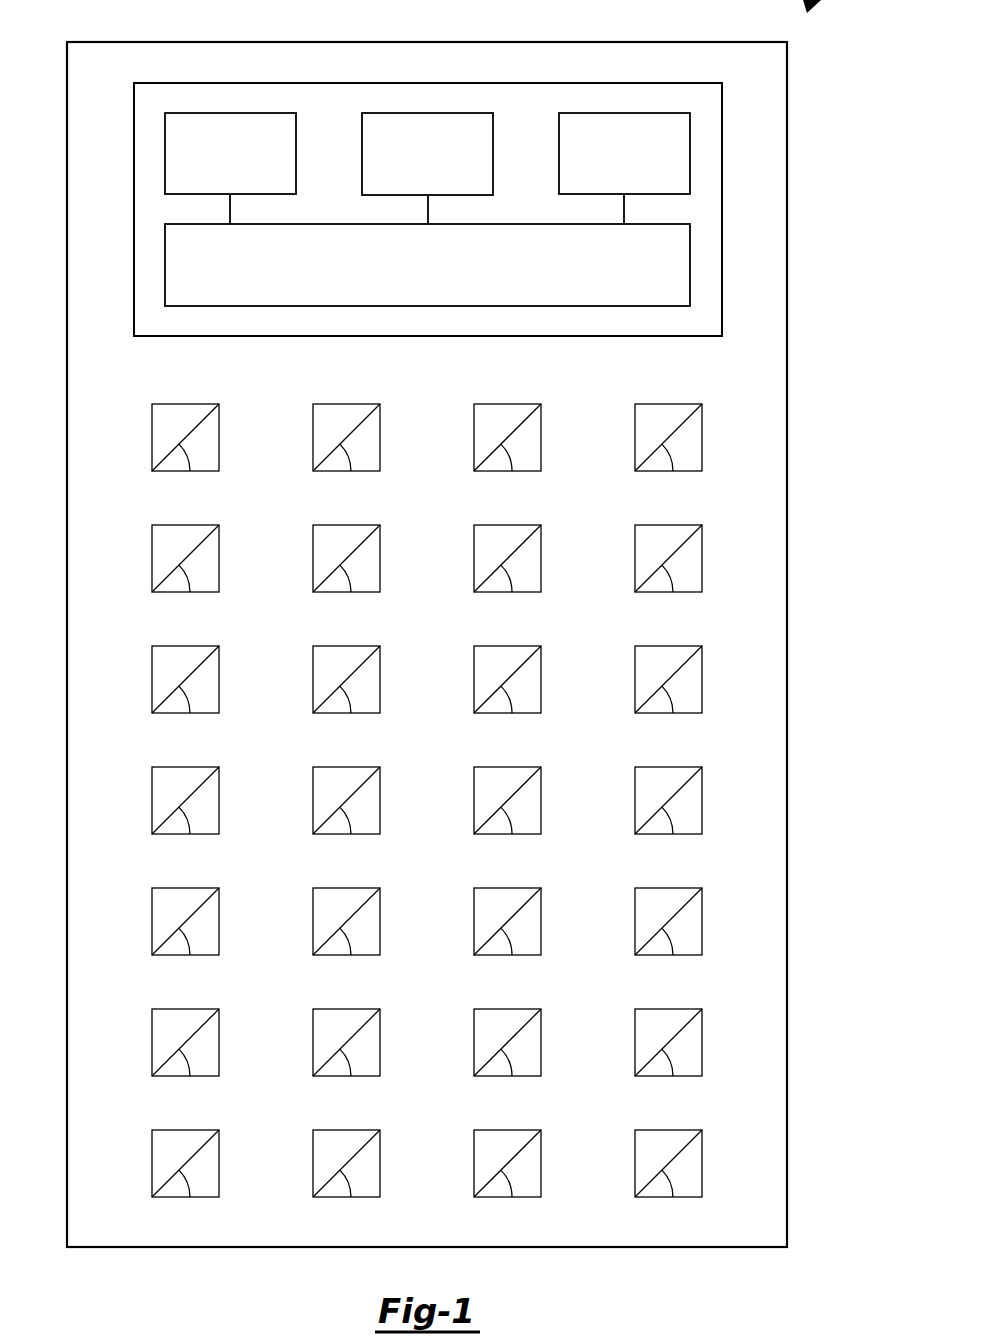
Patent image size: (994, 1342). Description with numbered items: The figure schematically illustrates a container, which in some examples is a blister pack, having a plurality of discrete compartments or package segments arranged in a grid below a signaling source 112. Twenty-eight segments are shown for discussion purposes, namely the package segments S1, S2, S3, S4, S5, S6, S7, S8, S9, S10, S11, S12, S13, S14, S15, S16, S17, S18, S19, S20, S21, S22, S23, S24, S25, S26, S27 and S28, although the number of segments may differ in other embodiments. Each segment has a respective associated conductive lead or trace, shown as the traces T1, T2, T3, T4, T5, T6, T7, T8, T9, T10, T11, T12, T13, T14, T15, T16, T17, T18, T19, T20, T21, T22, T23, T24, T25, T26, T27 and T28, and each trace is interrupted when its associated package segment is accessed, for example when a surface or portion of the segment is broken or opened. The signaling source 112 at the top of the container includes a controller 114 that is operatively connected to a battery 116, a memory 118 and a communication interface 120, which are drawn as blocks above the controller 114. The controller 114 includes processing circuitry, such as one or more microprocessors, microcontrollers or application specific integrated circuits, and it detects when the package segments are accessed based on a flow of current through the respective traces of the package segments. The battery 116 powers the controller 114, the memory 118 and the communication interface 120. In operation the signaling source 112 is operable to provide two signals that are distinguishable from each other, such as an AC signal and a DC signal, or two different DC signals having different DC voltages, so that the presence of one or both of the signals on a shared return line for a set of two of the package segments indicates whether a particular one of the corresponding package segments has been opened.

The signaling source 112 is at (722, 211).
The controller 114 is at (415, 293).
The battery 116 is at (217, 180).
The memory 118 is at (415, 180).
The communication interface 120 is at (610, 180).
The package segment S1 is at (702, 1163).
The package segment S2 is at (541, 1163).
The package segment S3 is at (380, 1163).
The package segment S4 is at (219, 1163).
The package segment S5 is at (702, 1042).
The package segment S6 is at (541, 1042).
The package segment S7 is at (380, 1042).
The package segment S8 is at (219, 1042).
The package segment S9 is at (702, 921).
The package segment S10 is at (546, 921).
The package segment S11 is at (385, 921).
The package segment S12 is at (224, 921).
The package segment S13 is at (707, 800).
The package segment S14 is at (546, 800).
The package segment S15 is at (385, 800).
The package segment S16 is at (224, 800).
The package segment S17 is at (708, 679).
The package segment S18 is at (546, 679).
The package segment S19 is at (385, 679).
The package segment S20 is at (224, 679).
The package segment S21 is at (707, 558).
The package segment S22 is at (546, 558).
The package segment S23 is at (385, 558).
The package segment S24 is at (224, 558).
The package segment S25 is at (707, 437).
The package segment S26 is at (546, 437).
The package segment S27 is at (386, 437).
The package segment S28 is at (224, 437).
The conductive trace T1 is at (670, 1205).
The conductive trace T2 is at (509, 1205).
The conductive trace T3 is at (348, 1205).
The conductive trace T4 is at (187, 1205).
The conductive trace T5 is at (670, 1084).
The conductive trace T6 is at (509, 1084).
The conductive trace T7 is at (348, 1084).
The conductive trace T8 is at (187, 1084).
The conductive trace T9 is at (670, 963).
The conductive trace T10 is at (515, 963).
The conductive trace T11 is at (354, 963).
The conductive trace T12 is at (193, 963).
The conductive trace T13 is at (676, 842).
The conductive trace T14 is at (515, 842).
The conductive trace T15 is at (354, 842).
The conductive trace T16 is at (193, 842).
The conductive trace T17 is at (676, 721).
The conductive trace T18 is at (515, 721).
The conductive trace T19 is at (354, 721).
The conductive trace T20 is at (193, 721).
The conductive trace T21 is at (676, 600).
The conductive trace T22 is at (515, 600).
The conductive trace T23 is at (354, 600).
The conductive trace T24 is at (193, 600).
The conductive trace T25 is at (676, 479).
The conductive trace T26 is at (515, 479).
The conductive trace T27 is at (354, 479).
The conductive trace T28 is at (193, 479).